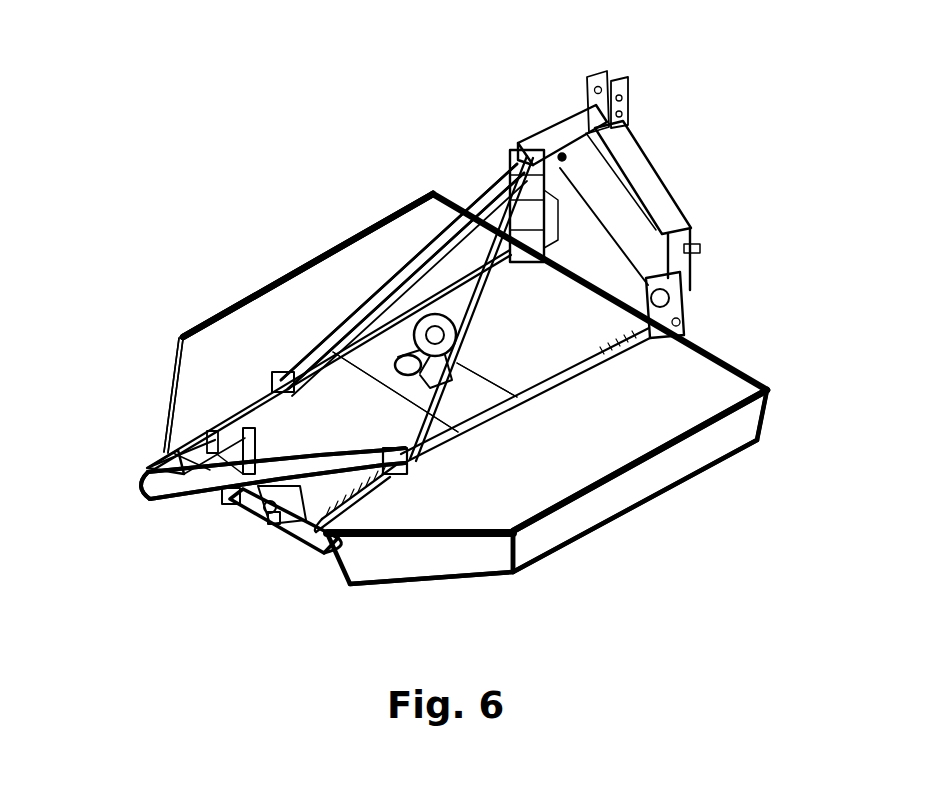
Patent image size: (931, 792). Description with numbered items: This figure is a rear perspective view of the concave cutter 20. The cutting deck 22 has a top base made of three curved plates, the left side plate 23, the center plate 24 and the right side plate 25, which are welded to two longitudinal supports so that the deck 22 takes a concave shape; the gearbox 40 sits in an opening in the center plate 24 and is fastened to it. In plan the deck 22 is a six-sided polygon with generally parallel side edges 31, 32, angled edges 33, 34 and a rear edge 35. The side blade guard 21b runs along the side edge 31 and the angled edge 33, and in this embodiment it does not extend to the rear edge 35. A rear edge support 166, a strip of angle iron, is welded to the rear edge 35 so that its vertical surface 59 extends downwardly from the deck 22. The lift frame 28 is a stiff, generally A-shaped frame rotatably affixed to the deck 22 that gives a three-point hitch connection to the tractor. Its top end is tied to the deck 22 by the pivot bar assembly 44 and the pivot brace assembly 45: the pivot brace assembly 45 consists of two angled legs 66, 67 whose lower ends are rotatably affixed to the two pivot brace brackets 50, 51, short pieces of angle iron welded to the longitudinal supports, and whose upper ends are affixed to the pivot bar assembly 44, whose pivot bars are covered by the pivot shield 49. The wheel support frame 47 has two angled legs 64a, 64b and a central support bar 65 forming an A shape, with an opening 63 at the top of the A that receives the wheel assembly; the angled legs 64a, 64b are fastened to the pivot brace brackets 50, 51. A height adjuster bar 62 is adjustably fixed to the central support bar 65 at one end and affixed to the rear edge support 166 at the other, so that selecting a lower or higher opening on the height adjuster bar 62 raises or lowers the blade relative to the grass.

The concave cutter 20 is at (713, 82).
The side blade guard 21b is at (586, 518).
The cutting deck 22 is at (654, 395).
The left side plate 23 is at (316, 315).
The center plate 24 is at (369, 416).
The right side plate 25 is at (534, 475).
The lift frame 28 is at (652, 172).
The side edge 31 is at (660, 462).
The side edge 32 is at (295, 270).
The angled edge 33 is at (478, 544).
The angled edge 34 is at (170, 385).
The rear edge 35 is at (295, 536).
The gearbox 40 is at (405, 336).
The pivot bar assembly 44 is at (518, 147).
The pivot brace assembly 45 is at (400, 268).
The wheel support frame 47 is at (197, 500).
The pivot shield 49 is at (562, 122).
The pivot brace bracket 50 is at (277, 373).
The pivot brace bracket 51 is at (408, 476).
The vertical surface 59 is at (270, 508).
The height adjuster bar 62 is at (230, 505).
The opening 63 is at (157, 463).
The angled leg 64a is at (340, 462).
The angled leg 64b is at (247, 394).
The central support bar 65 is at (250, 444).
The angled leg 66 is at (437, 239).
The angled leg 67 is at (495, 193).
The rear edge support 166 is at (273, 524).